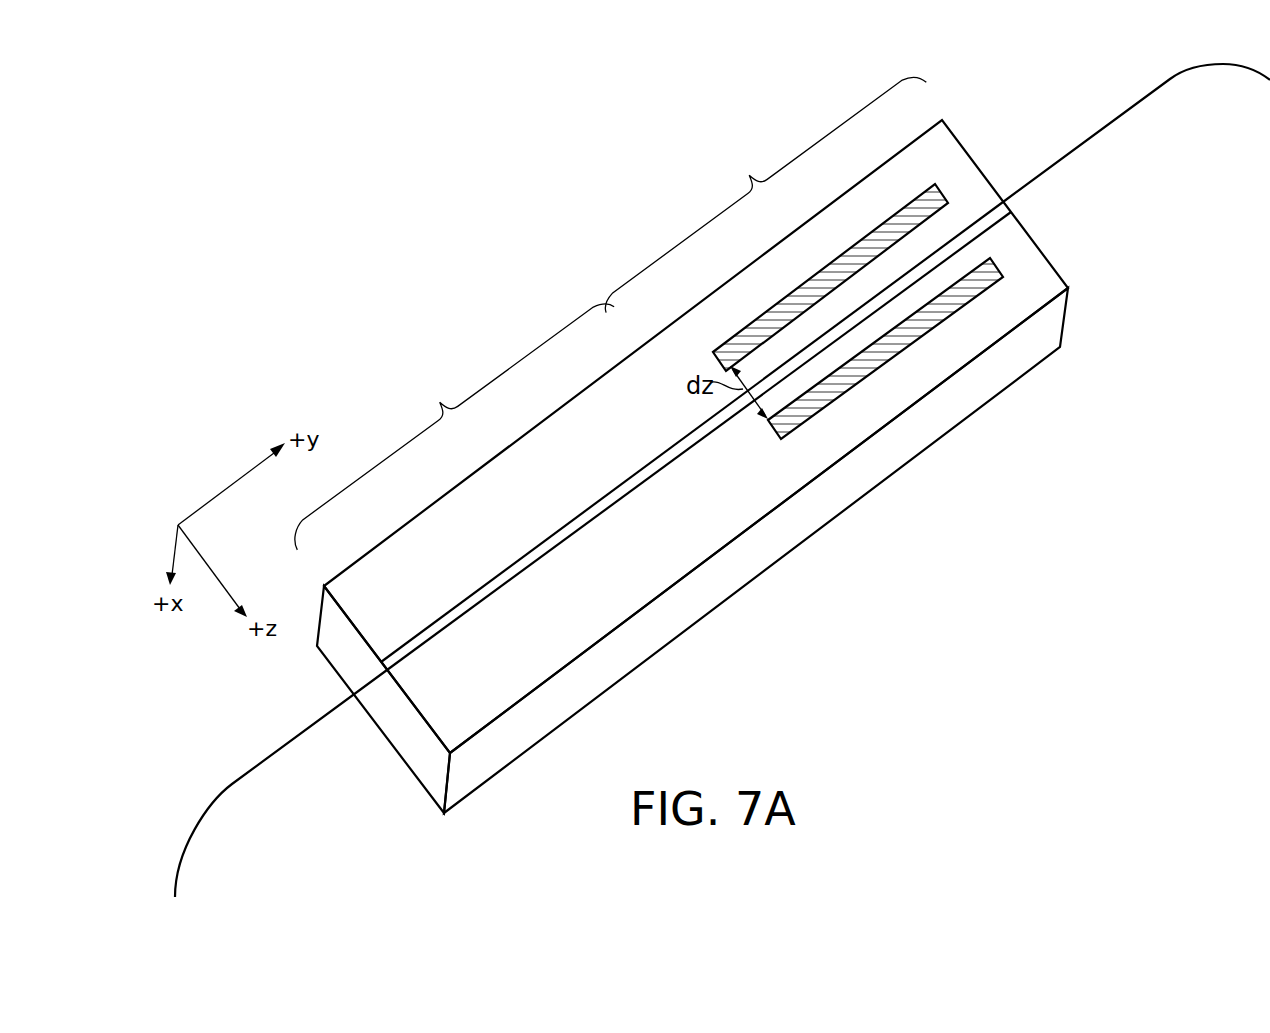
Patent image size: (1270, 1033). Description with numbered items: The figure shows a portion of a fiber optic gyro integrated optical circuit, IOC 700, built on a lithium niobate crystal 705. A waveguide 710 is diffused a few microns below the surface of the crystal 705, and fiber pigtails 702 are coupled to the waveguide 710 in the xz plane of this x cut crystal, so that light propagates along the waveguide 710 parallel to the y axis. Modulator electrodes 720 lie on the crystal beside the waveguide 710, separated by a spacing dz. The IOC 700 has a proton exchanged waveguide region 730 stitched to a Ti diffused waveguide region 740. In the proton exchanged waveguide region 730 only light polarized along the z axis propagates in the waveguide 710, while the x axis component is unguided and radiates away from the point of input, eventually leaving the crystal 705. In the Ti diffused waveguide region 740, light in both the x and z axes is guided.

The fiber optic gyro IOC 700 is at (226, 200).
The fiber pigtails 702 is at (1112, 121).
The lithium niobate crystal 705 is at (737, 509).
The waveguide 710 is at (599, 502).
The modulator electrodes 720 is at (902, 209).
The proton exchanged waveguide region 730 is at (454, 427).
The Ti diffused waveguide region 740 is at (765, 194).